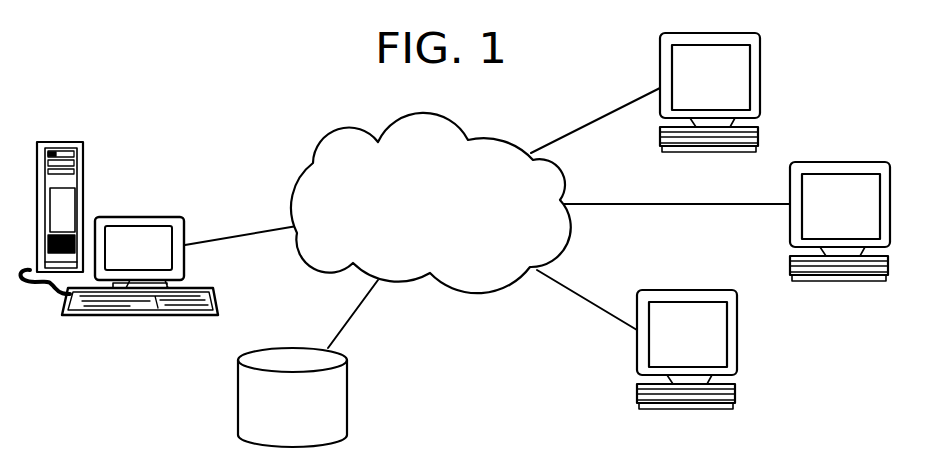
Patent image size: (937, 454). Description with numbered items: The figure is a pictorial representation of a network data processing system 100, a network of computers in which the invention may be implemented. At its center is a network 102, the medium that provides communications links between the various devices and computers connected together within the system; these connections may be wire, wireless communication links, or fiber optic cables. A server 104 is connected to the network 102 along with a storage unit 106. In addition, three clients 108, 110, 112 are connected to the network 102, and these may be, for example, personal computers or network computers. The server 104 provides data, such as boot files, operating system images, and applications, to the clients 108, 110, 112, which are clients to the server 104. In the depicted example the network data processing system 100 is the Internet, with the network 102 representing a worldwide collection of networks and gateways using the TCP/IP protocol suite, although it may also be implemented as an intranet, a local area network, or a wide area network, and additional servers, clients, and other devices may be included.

The network data processing system 100 is at (415, 100).
The network 102 is at (408, 198).
The server 104 is at (82, 180).
The storage unit 106 is at (253, 349).
The client 108 is at (672, 33).
The client 110 is at (801, 162).
The client 112 is at (643, 290).